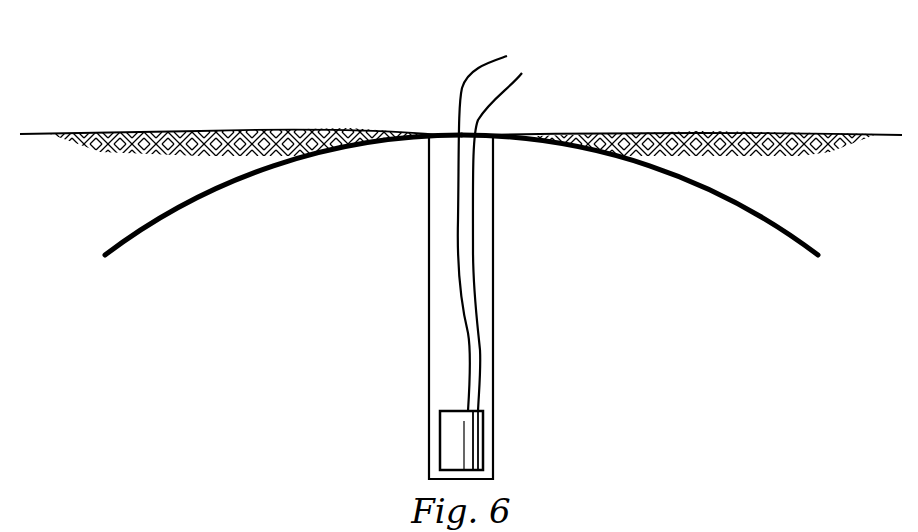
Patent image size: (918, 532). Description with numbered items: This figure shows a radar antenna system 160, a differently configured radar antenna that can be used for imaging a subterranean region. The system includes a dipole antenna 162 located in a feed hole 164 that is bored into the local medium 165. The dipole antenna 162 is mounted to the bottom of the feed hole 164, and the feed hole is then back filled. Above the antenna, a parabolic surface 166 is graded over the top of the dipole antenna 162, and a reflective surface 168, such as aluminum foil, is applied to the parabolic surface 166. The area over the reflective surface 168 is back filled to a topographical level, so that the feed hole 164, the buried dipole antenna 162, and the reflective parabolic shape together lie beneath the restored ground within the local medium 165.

The radar antenna system 160 is at (327, 56).
The dipole antenna 162 is at (450, 443).
The feed hole 164 is at (440, 287).
The local medium 165 is at (537, 271).
The parabolic surface 166 is at (658, 170).
The reflective surface 168 is at (274, 170).